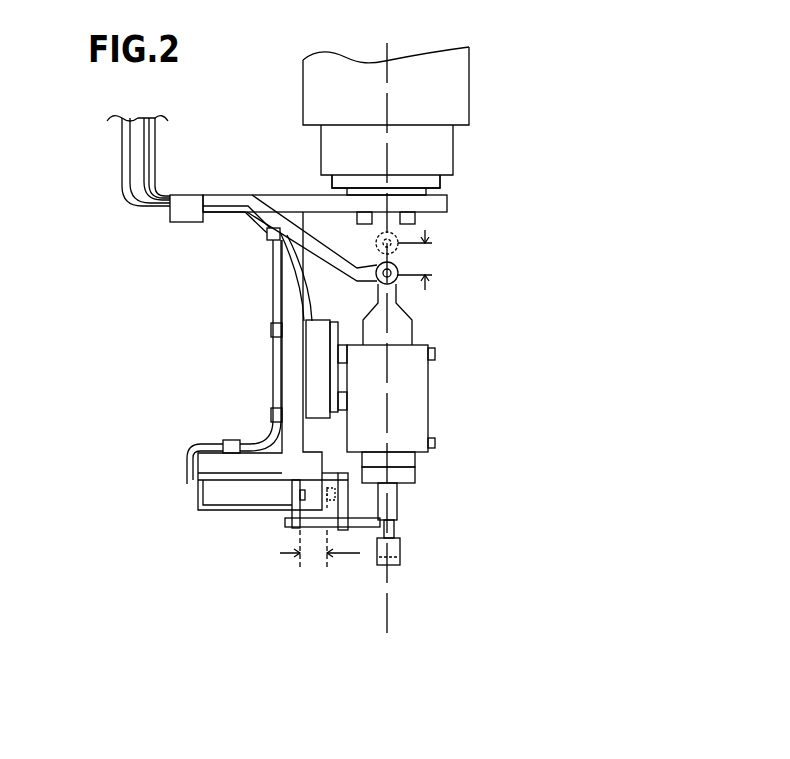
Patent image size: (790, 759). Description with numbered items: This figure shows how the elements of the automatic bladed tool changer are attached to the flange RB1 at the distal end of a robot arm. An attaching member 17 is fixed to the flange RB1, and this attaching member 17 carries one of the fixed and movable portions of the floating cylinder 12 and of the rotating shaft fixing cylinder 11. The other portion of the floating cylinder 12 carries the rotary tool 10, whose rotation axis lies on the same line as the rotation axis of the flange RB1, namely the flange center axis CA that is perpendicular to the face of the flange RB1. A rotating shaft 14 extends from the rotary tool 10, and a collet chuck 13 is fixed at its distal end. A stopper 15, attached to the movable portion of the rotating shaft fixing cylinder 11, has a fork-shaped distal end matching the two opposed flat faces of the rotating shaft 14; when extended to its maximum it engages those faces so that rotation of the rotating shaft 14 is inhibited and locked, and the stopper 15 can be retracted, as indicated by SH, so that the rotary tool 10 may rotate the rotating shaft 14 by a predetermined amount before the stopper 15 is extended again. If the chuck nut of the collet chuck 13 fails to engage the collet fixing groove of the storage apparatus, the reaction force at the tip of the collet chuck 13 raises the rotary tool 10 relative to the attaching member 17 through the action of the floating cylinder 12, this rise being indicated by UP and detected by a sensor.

The rotary tool 10 is at (428, 395).
The rotating shaft fixing cylinder 11 is at (217, 495).
The floating cylinder 12 is at (312, 385).
The collet chuck 13 is at (402, 558).
The rotating shaft 14 is at (402, 508).
The stopper 15 is at (362, 528).
The attaching member 17 is at (447, 203).
The flange center axis CA is at (386, 102).
The flange RB1 is at (420, 192).
The rise UP is at (429, 260).
The stopper retraction SH is at (320, 563).